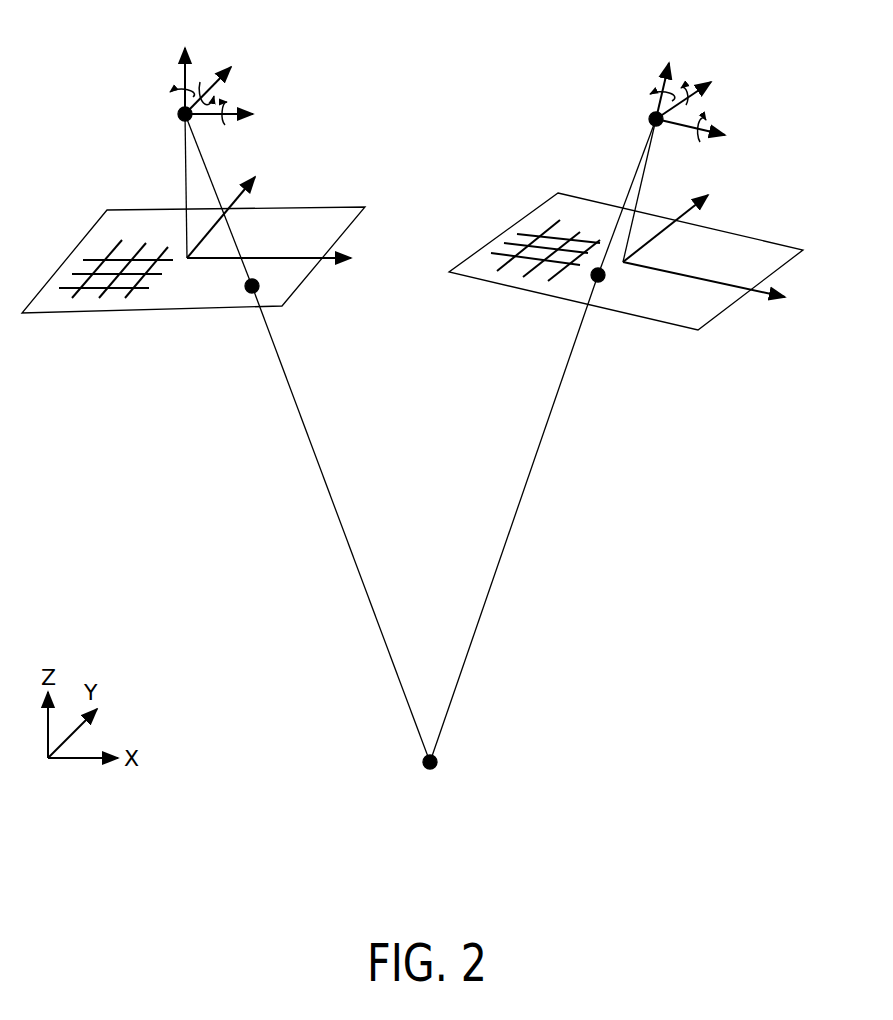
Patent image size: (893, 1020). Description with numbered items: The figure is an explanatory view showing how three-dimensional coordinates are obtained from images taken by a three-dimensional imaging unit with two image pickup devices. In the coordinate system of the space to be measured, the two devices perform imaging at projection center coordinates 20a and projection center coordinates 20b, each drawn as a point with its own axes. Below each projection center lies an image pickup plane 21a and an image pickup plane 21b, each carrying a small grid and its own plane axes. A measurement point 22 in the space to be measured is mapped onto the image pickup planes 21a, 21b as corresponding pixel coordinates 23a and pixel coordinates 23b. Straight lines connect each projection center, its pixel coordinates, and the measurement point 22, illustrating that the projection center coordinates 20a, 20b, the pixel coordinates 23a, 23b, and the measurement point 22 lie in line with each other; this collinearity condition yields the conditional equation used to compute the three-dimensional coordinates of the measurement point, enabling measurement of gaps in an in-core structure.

The projection center coordinates 20a is at (185, 120).
The projection center coordinates 20b is at (651, 124).
The image pickup plane 21a is at (313, 218).
The image pickup plane 21b is at (730, 247).
The measurement point 22 is at (432, 770).
The pixel coordinates 23a is at (250, 292).
The pixel coordinates 23b is at (600, 282).